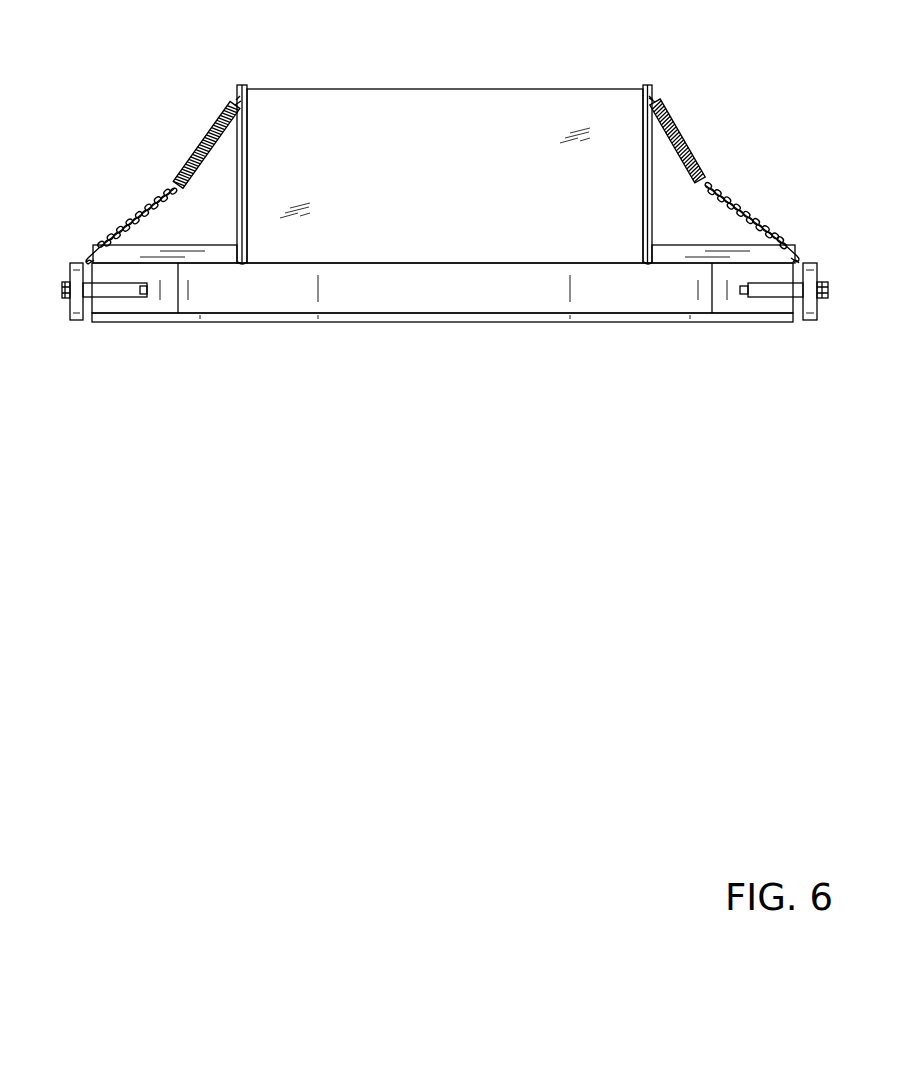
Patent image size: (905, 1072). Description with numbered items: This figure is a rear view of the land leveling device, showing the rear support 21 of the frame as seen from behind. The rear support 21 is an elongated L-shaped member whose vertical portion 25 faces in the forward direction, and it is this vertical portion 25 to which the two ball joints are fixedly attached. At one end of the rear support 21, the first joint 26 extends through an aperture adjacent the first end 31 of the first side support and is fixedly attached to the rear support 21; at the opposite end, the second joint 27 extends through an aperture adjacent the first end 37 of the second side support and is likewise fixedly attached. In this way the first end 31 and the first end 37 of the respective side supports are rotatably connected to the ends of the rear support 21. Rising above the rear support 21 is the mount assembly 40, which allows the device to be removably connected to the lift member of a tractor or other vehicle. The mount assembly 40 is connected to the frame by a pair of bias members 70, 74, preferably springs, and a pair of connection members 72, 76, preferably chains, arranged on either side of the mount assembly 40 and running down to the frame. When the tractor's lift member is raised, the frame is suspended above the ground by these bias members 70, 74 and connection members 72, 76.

The rear support 21 is at (345, 322).
The vertical portion 25 is at (718, 295).
The first joint 26 is at (792, 292).
The second joint 27 is at (97, 291).
The first end 31 is at (813, 308).
The first end 37 is at (72, 310).
The mount assembly 40 is at (445, 103).
The bias member 70 is at (687, 141).
The connection member 72 is at (750, 217).
The bias member 74 is at (203, 140).
The connection member 76 is at (150, 207).